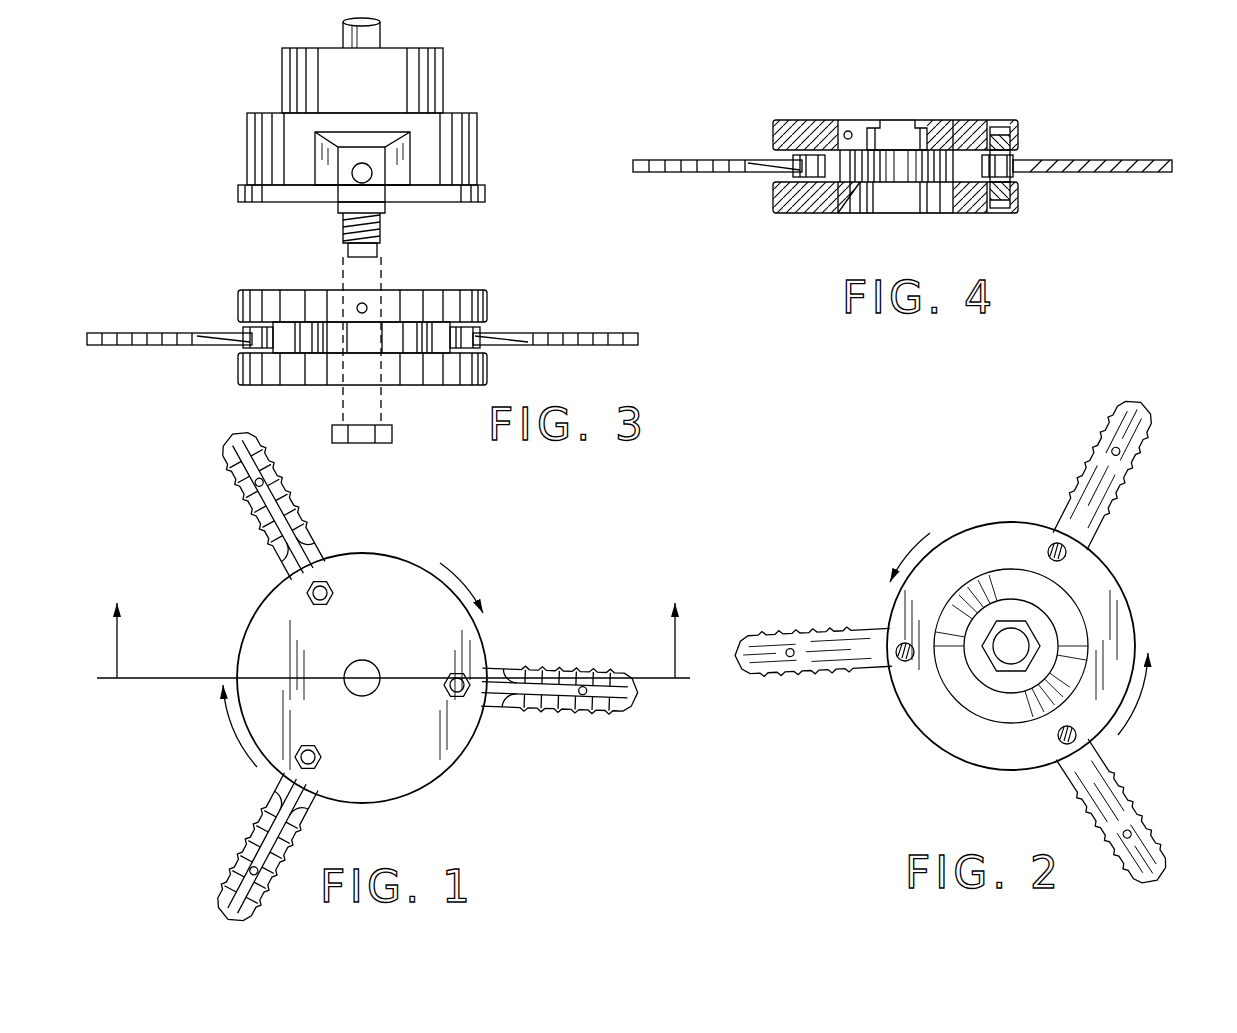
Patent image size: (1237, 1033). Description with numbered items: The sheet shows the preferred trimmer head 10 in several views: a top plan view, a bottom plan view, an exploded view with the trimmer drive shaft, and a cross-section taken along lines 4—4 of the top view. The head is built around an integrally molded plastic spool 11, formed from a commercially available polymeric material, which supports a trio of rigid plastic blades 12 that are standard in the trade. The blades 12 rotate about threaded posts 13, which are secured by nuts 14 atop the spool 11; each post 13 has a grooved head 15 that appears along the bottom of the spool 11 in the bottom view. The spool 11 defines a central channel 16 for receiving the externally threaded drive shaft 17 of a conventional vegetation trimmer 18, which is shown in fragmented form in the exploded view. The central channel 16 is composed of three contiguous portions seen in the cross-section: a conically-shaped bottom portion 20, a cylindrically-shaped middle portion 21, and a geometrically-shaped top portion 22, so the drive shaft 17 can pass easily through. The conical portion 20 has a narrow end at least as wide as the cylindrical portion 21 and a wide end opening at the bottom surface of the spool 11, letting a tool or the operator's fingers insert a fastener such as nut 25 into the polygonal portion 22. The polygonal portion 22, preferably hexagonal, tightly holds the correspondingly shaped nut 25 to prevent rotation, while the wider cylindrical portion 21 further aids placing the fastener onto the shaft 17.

In FIG. 3, the trimmer head 10 is at (386, 253).
In FIG. 1, the trimmer head 10 is at (404, 676).
In FIG. 2, the trimmer head 10 is at (955, 642).
In FIG. 4, the trimmer head 10 is at (914, 145).
In FIG. 3, the spool 11 is at (410, 292).
In FIG. 1, the spool 11 is at (272, 642).
In FIG. 2, the spool 11 is at (955, 743).
In FIG. 4, the spool 11 is at (875, 141).
In FIG. 3, the rigid plastic blades 12 is at (102, 332).
In FIG. 1, the rigid plastic blades 12 is at (237, 492).
In FIG. 2, the rigid plastic blades 12 is at (947, 488).
In FIG. 4, the rigid plastic blades 12 is at (1117, 157).
In FIG. 3, the threaded posts 13 is at (480, 327).
In FIG. 1, the nuts 14 is at (332, 590).
In FIG. 2, the grooved head 15 is at (1067, 552).
In FIG. 4, the grooved head 15 is at (1000, 167).
In FIG. 1, the central channel 16 is at (363, 668).
In FIG. 4, the central channel 16 is at (905, 108).
In FIG. 3, the drive shaft 17 is at (330, 237).
In FIG. 3, the vegetation trimmer 18 is at (227, 140).
In FIG. 2, the conically-shaped bottom portion 20 is at (1057, 607).
In FIG. 4, the conically-shaped bottom portion 20 is at (885, 215).
In FIG. 2, the cylindrically-shaped middle portion 21 is at (992, 615).
In FIG. 4, the cylindrically-shaped middle portion 21 is at (900, 163).
In FIG. 2, the geometrically-shaped top portion 22 is at (983, 658).
In FIG. 4, the geometrically-shaped top portion 22 is at (893, 140).
In FIG. 3, the nut 25 is at (395, 440).
In FIG. 1, the section line 4- 4 is at (395, 624).